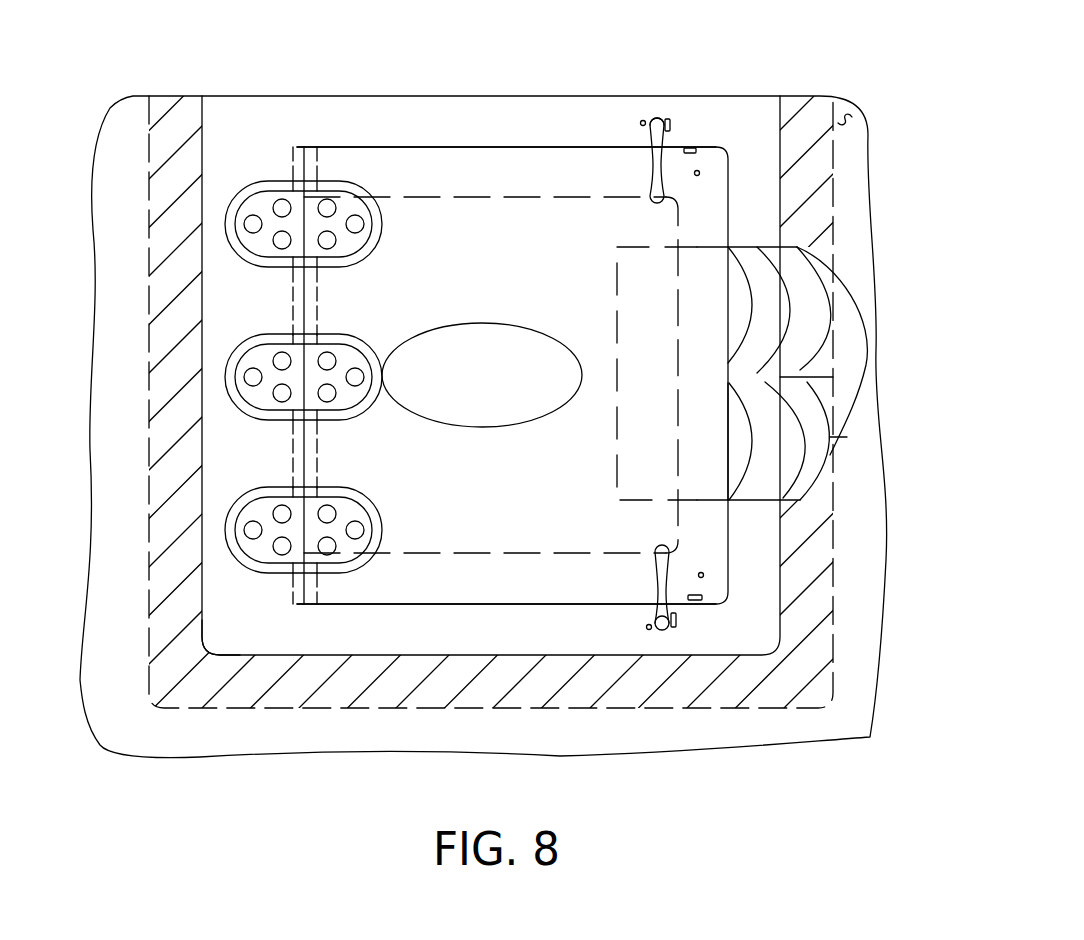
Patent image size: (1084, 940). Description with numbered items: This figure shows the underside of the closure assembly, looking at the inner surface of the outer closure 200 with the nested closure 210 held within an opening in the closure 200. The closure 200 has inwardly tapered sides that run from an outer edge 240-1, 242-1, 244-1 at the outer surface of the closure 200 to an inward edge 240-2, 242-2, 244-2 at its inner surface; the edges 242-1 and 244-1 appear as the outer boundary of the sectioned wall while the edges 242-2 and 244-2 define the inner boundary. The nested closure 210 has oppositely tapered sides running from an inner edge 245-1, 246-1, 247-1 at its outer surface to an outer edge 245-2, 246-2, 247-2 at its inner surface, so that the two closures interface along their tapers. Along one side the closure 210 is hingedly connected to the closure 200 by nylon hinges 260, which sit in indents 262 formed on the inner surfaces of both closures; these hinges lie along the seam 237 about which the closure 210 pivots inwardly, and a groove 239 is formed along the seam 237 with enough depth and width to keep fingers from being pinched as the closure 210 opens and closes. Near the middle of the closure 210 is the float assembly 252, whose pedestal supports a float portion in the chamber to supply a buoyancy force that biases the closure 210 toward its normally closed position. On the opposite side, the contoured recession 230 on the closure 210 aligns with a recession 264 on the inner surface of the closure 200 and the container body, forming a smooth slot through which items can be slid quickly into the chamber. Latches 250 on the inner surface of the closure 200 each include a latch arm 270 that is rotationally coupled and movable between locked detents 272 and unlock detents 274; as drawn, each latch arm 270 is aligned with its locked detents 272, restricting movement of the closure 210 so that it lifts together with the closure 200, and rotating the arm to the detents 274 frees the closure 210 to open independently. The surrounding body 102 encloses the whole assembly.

The closure 200 is at (739, 96).
The body 102 is at (852, 117).
The nested closure 210 is at (458, 147).
The inner edge 245-1 is at (443, 197).
The outer edge 245-2 is at (503, 147).
The inner edge 247-1 is at (470, 552).
The outer edge 247-2 is at (405, 604).
The outer edge 242-1 is at (548, 708).
The inward edge 242-2 is at (452, 655).
The outer edge 244-1 is at (165, 537).
The inward edge 244-2 is at (208, 638).
The hinge 260 is at (318, 190).
The indent 262 is at (381, 212).
The seam 237 is at (293, 475).
The groove 239 is at (318, 463).
The float assembly 252 is at (486, 308).
The contoured recession 230 is at (700, 247).
The inner edge 246-1 is at (679, 430).
The outer edge 246-2 is at (729, 477).
The outer edge 240-1 is at (847, 437).
The inward edge 240-2 is at (833, 377).
The recession 264 is at (805, 250).
The latch arm 270 is at (648, 187).
The locked detent 272 is at (671, 125).
The unlock detent 274 is at (695, 157).
The latch 250 is at (657, 105).